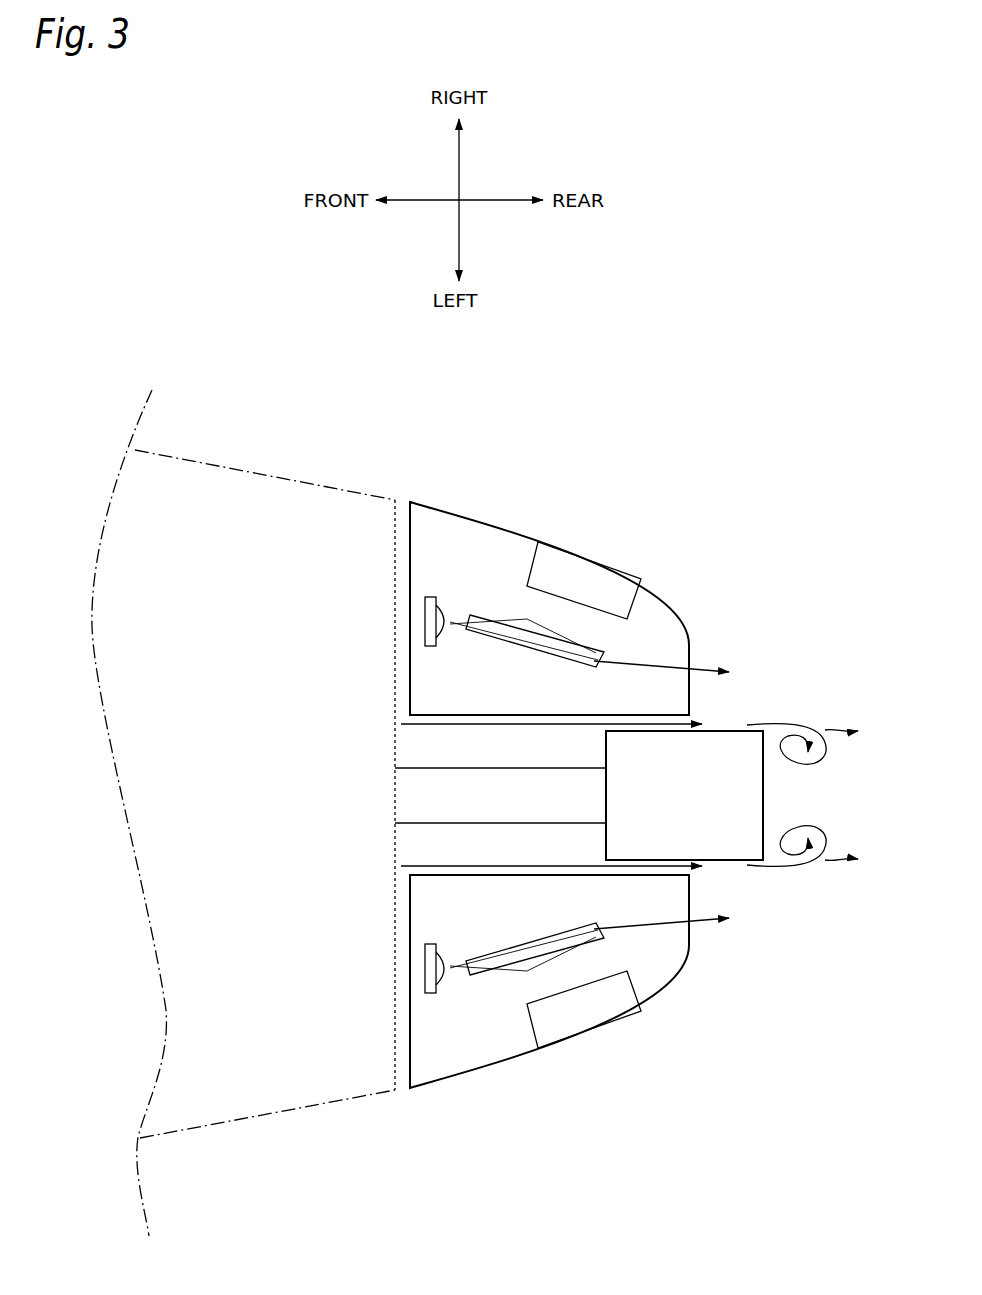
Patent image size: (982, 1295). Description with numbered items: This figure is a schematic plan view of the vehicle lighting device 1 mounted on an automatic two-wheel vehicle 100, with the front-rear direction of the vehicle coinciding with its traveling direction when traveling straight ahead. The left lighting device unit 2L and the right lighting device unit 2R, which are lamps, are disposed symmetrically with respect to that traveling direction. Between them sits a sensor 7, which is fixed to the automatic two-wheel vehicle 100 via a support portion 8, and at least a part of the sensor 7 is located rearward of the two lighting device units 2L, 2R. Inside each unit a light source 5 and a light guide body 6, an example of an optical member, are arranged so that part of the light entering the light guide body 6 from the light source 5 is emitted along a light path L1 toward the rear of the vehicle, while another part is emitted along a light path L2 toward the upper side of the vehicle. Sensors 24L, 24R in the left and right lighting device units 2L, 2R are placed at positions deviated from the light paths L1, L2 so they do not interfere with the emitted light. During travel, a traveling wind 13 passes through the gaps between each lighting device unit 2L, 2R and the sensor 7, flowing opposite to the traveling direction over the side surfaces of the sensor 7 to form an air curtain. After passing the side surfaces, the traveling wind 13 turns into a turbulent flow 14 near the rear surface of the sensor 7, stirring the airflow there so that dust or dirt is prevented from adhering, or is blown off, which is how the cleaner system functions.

The automatic two-wheel vehicle 100 is at (258, 473).
The vehicle lighting device 1 is at (707, 433).
The right lighting device unit 2R is at (515, 528).
The left lighting device unit 2L is at (512, 1067).
The sensor 24R is at (590, 565).
The sensor 24L is at (595, 1022).
The light source 5 is at (445, 608).
The light guide body 6 is at (597, 652).
The light path L1 is at (700, 670).
The light path L2 is at (448, 633).
The traveling wind 13 is at (445, 727).
The support portion 8 is at (430, 792).
The sensor 7 is at (763, 787).
The turbulent flow 14 is at (808, 726).